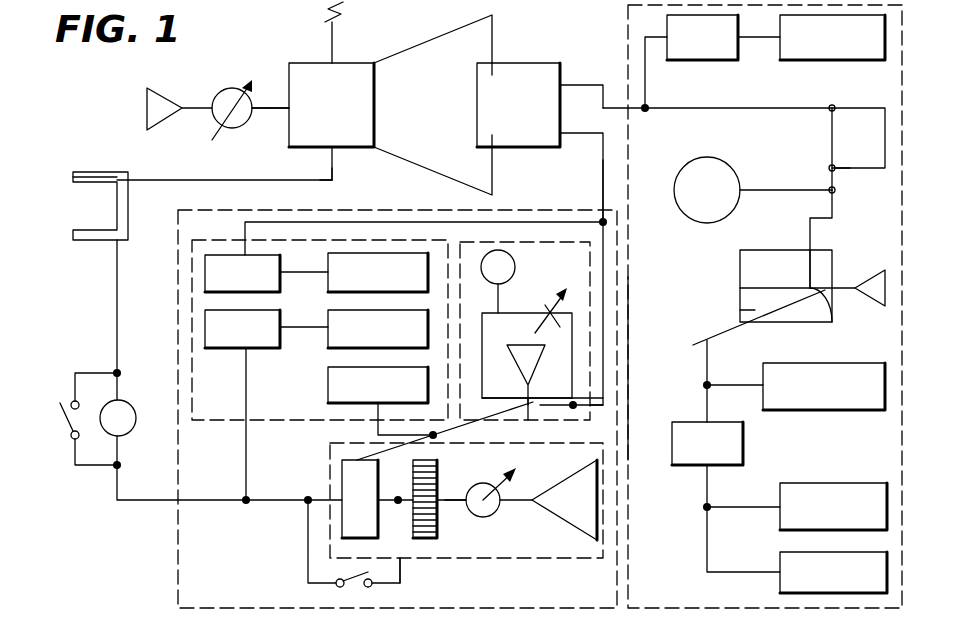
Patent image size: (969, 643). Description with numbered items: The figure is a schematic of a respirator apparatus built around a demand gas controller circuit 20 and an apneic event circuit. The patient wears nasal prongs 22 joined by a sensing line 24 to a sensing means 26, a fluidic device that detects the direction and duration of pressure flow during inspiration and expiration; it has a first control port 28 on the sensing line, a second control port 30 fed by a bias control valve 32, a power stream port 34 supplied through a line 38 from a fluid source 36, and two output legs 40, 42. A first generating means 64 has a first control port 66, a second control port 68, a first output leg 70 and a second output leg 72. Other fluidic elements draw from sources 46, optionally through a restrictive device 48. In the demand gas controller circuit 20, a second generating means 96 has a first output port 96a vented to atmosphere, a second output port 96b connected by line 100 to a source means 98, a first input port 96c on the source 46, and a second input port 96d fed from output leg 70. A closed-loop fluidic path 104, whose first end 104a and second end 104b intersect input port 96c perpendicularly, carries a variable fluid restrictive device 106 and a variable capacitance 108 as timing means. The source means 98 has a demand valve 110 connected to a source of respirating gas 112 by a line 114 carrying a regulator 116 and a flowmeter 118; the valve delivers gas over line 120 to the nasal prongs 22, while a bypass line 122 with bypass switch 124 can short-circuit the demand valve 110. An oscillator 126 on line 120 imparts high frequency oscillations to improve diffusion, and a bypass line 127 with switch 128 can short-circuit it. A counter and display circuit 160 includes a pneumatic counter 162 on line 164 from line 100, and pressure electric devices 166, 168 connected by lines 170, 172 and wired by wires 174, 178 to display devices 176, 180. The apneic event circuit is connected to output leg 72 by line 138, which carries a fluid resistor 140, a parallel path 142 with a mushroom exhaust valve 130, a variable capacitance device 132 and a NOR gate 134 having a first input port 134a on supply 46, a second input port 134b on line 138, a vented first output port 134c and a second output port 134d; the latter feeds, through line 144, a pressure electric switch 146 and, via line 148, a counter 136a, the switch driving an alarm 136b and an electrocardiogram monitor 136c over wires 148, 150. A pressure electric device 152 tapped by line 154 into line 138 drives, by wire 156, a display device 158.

The demand gas controller circuit 20 is at (432, 210).
The nasal prongs 22 is at (125, 172).
The sensing line 24 is at (238, 180).
The sensing means 26 is at (304, 150).
The first control port 28 is at (337, 150).
The second control port 30 is at (326, 63).
The bias control valve 32 is at (341, 18).
The power stream port 34 is at (282, 106).
The fluid source 36 is at (162, 88).
The line 38 is at (260, 108).
The output port 40 is at (400, 54).
The output port 42 is at (399, 160).
The fluid source 46 is at (528, 345).
The restrictive device 48 is at (232, 88).
The first generating means 64 is at (543, 62).
The first control port 66 is at (492, 63).
The second control port 68 is at (492, 148).
The first output leg 70 is at (567, 134).
The second output leg 72 is at (572, 84).
The second generating means 96 is at (628, 318).
The first output port 96a is at (562, 414).
The second output port 96b is at (525, 414).
The first input port 96c is at (533, 392).
The second input port 96d is at (608, 407).
The source means 98 is at (330, 478).
The line 100 is at (462, 424).
The closed-loop fluidic path 104 is at (576, 303).
The first end 104a is at (602, 399).
The second end 104b is at (505, 398).
The fluid restrictive device 106 is at (505, 296).
The capacitance device 108 is at (514, 264).
The demand valve 110 is at (380, 488).
The source of respirating gas 112 is at (559, 525).
The line 114 is at (450, 506).
The regulator 116 is at (484, 518).
The flowmeter 118 is at (438, 488).
The line 120 is at (110, 328).
The bypass line 122 is at (404, 580).
The bypass switch 124 is at (336, 583).
The oscillator 126 is at (124, 438).
The bypass line 127 is at (106, 470).
The switch 128 is at (62, 428).
The exhaust means 130 is at (850, 168).
The variable capacitance device 132 is at (738, 178).
The digital fluidic device 134 is at (740, 258).
The first input port 134a is at (832, 310).
The second input port 134b is at (810, 264).
The first output port 134c is at (758, 288).
The second output port 134d is at (755, 310).
The digital counter 136a is at (804, 363).
The alarm 136b is at (832, 483).
The electrocardiogram monitor 136c is at (778, 556).
The line 138 is at (734, 108).
The fluid resistor 140 is at (827, 140).
The fluid path 142 is at (862, 108).
The line 144 is at (693, 345).
The pressure electric switch 146 is at (746, 452).
The line 148 is at (747, 385).
The wire 150 is at (754, 506).
The pressure/electric device 152 is at (694, 60).
The line 154 is at (646, 102).
The wire 156 is at (754, 42).
The display device 158 is at (794, 60).
The counter and display circuit 160 is at (192, 374).
The pneumatic counter 162 is at (328, 387).
The line 164 is at (377, 434).
The pressure electric device 166 is at (205, 327).
The pressure electric device 168 is at (225, 254).
The line 170 is at (246, 461).
The line 172 is at (562, 214).
The wire 174 is at (291, 330).
The display device 176 is at (322, 346).
The wire 178 is at (309, 272).
The display device 180 is at (322, 288).